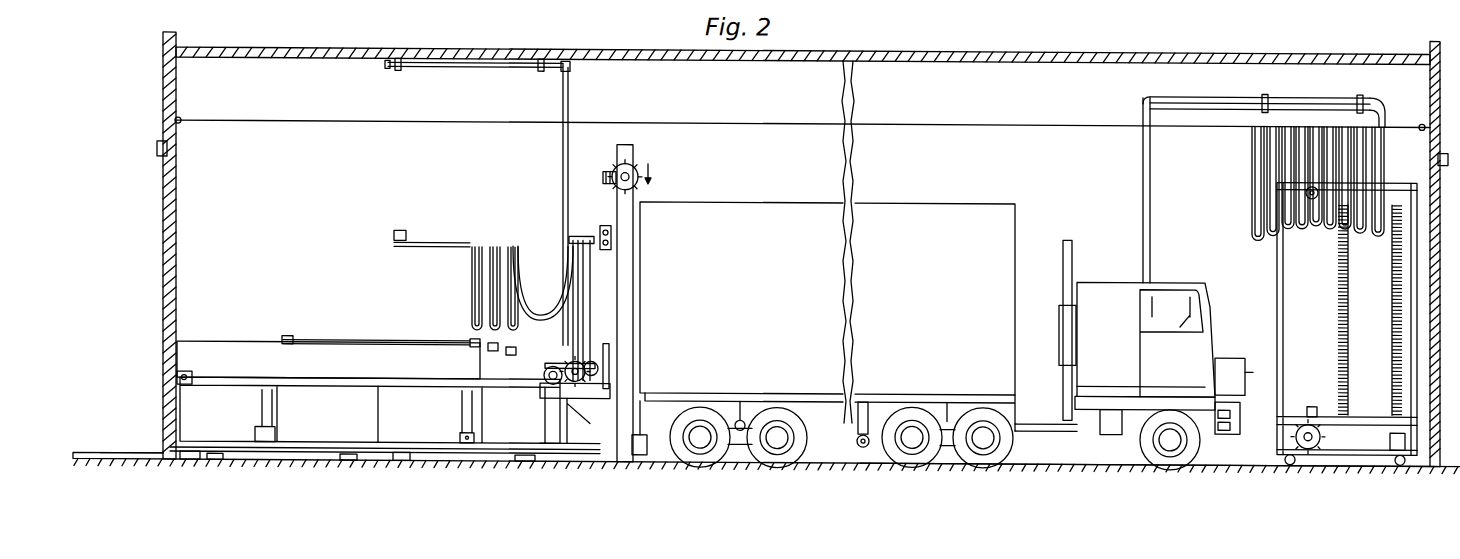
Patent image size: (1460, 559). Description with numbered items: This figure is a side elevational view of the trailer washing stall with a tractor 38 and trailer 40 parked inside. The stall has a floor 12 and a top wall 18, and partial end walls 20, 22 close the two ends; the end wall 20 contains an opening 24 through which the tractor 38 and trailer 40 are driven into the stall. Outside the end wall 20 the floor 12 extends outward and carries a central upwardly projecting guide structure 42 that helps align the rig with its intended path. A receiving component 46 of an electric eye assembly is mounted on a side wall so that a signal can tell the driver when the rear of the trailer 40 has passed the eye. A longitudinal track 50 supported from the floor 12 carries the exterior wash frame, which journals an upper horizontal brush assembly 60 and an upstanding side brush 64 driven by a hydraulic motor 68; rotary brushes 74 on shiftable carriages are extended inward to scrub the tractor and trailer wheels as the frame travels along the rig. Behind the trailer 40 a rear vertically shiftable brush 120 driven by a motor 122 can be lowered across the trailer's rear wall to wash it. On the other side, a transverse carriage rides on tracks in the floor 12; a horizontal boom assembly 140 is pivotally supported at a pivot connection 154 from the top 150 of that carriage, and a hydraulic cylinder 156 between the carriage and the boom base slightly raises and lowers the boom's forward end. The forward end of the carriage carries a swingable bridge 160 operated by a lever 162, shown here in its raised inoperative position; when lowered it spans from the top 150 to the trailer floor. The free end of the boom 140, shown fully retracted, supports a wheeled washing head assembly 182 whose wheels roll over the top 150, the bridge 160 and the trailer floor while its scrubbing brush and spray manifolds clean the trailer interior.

The floor 12 is at (118, 451).
The top wall 18 is at (963, 46).
The end wall 20 is at (173, 152).
The end wall 22 is at (1428, 81).
The opening 24 is at (172, 248).
The tractor 38 is at (1104, 289).
The trailer 40 is at (906, 210).
The guide structure 42 is at (140, 451).
The receiving component 46 is at (803, 63).
The longitudinal track 50 is at (1072, 454).
The upper horizontal brush assembly 60 is at (1347, 324).
The side brush 64 is at (1340, 279).
The hydraulic motor 68 is at (1380, 170).
The rotary brush 74 is at (1322, 429).
The rear vertically shiftable brush 120 is at (640, 158).
The motor 122 is at (606, 168).
The horizontal boom assembly 140 is at (248, 360).
The top of carriage 150 is at (362, 388).
The pivot connection 154 is at (185, 371).
The hydraulic cylinder 156 is at (462, 397).
The swingable bridge 160 is at (607, 359).
The lever 162 is at (530, 375).
The washing head assembly 182 is at (515, 0).